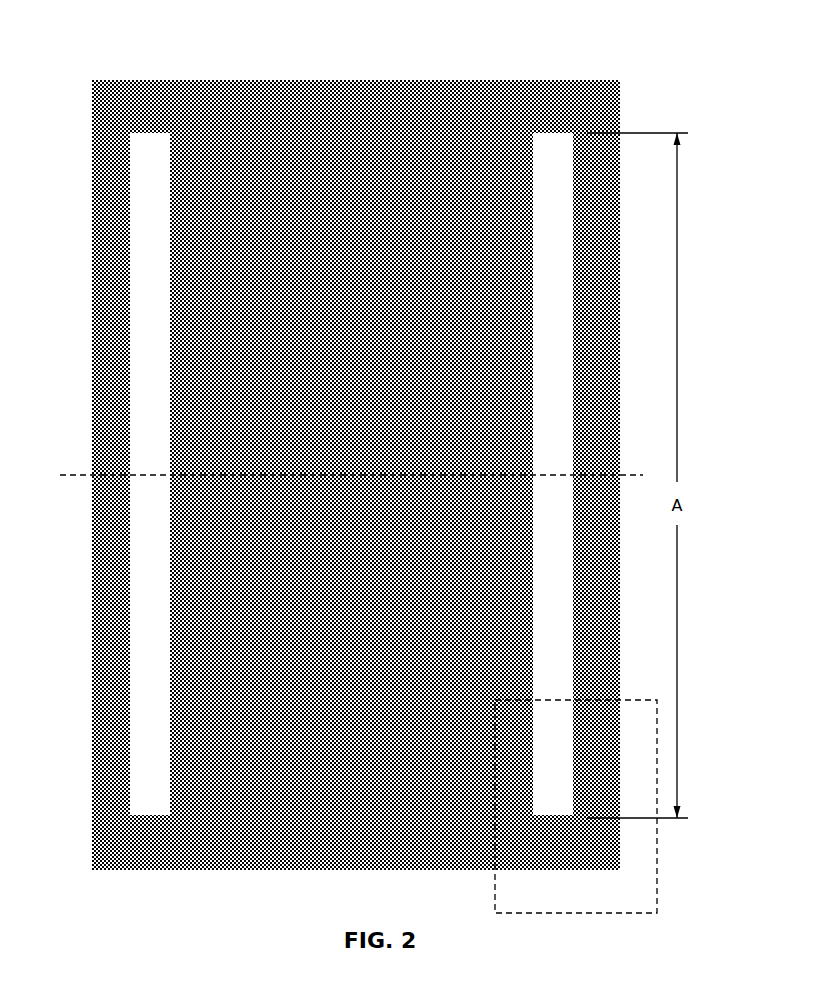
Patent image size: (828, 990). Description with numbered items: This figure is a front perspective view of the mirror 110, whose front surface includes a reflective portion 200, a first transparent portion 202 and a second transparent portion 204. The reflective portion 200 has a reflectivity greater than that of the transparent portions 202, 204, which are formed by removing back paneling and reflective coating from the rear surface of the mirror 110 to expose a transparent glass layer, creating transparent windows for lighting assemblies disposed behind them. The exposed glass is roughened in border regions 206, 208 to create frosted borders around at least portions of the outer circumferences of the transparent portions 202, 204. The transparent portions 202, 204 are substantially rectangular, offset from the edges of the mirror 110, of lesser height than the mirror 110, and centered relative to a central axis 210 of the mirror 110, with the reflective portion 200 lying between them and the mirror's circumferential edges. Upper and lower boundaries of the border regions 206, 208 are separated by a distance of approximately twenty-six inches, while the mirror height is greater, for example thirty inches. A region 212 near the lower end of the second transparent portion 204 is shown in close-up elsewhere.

The mirror 110 is at (285, 80).
The reflective portion 200 is at (265, 815).
The first transparent portion 202 is at (140, 278).
The second transparent portion 204 is at (560, 308).
The border region 206 is at (125, 392).
The border region 208 is at (580, 433).
The central axis 210 is at (90, 475).
The region 212 is at (657, 882).